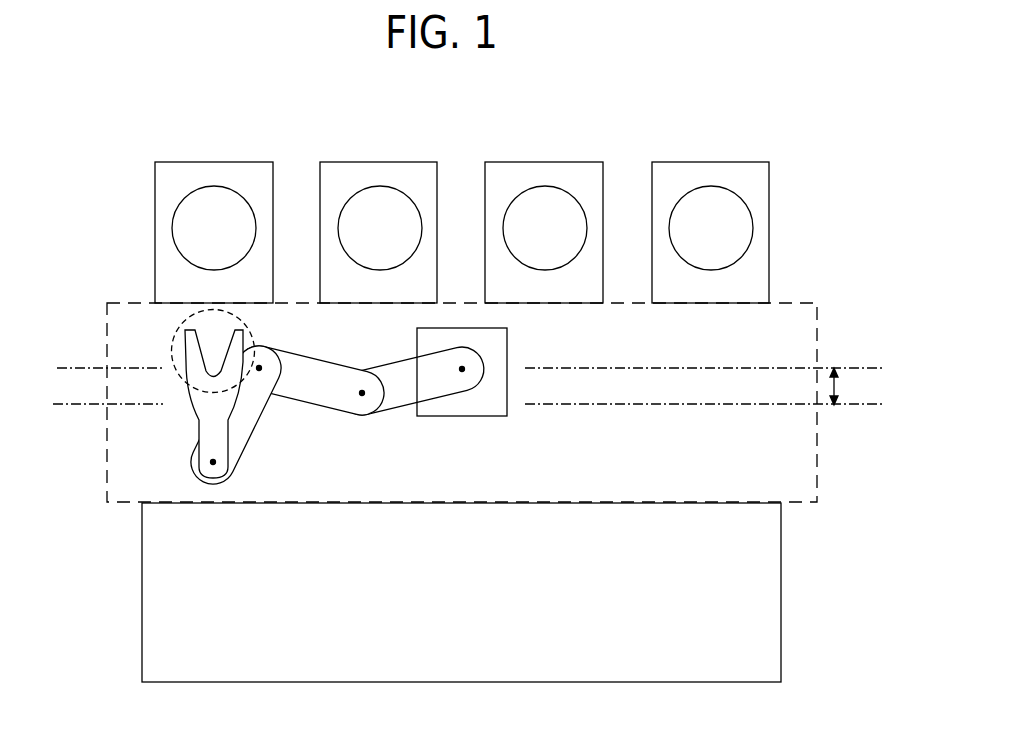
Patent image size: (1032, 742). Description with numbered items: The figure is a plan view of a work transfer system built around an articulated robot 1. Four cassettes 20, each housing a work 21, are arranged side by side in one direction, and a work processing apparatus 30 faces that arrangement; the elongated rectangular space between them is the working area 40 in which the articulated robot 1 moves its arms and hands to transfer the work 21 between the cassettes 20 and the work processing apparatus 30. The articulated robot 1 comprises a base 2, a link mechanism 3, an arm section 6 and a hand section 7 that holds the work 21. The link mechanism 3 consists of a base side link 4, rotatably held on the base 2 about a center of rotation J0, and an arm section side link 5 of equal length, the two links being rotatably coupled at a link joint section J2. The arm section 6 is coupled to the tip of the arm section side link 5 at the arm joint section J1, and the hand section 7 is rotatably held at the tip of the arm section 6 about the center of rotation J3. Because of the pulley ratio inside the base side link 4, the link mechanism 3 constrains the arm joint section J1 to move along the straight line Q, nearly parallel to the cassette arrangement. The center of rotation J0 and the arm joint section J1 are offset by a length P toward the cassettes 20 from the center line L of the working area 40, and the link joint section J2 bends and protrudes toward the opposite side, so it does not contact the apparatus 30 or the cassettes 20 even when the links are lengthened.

The articulated robot 1 is at (342, 405).
The base 2 is at (503, 339).
The link mechanism 3 is at (360, 413).
The base side link 4 is at (393, 400).
The arm section side link 5 is at (320, 400).
The arm section 6 is at (250, 427).
The hand section 7 is at (203, 422).
The center of rotation of the base side link J0 is at (462, 369).
The arm joint section J1 is at (260, 368).
The link joint section J2 is at (362, 393).
The center of rotation of the hand section J3 is at (214, 461).
The cassette 20 is at (248, 165).
The work 21 is at (210, 188).
The work processing apparatus 30 is at (775, 587).
The working area 40 is at (812, 325).
The length P is at (845, 386).
The straight line Q is at (472, 369).
The center line L is at (473, 405).